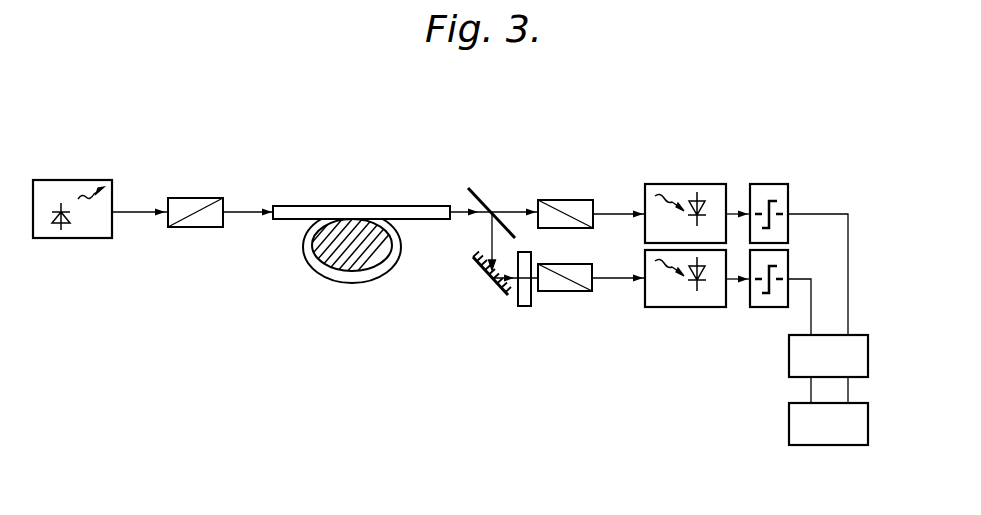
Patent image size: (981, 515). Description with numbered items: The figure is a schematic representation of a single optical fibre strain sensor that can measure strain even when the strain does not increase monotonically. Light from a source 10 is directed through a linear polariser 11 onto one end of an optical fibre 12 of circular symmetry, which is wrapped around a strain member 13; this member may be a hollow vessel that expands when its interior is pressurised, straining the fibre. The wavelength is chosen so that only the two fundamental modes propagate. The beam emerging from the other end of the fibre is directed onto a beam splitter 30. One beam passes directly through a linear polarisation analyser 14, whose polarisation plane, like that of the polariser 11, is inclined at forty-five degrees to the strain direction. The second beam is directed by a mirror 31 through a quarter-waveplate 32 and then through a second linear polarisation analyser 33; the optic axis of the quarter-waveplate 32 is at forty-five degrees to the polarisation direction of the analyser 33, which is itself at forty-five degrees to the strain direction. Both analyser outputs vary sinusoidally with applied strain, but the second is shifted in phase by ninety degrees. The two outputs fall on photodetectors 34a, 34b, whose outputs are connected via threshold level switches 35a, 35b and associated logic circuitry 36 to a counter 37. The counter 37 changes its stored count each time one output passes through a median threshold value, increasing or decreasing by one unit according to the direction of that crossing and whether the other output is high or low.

The source 10 is at (53, 180).
The linear polariser 11 is at (173, 197).
The optical fibre 12 is at (307, 207).
The strain member 13 is at (350, 225).
The beam splitter 30 is at (478, 195).
The linear polarisation analyser 14 is at (555, 200).
The photodetector 34b is at (673, 184).
The threshold level switch 35b is at (762, 184).
The mirror 31 is at (481, 263).
The quarter-waveplate 32 is at (525, 306).
The second linear polarisation analyser 33 is at (570, 292).
The photodetector 34a is at (672, 308).
The threshold level switch 35a is at (760, 308).
The logic circuitry 36 is at (789, 362).
The counter 37 is at (789, 418).